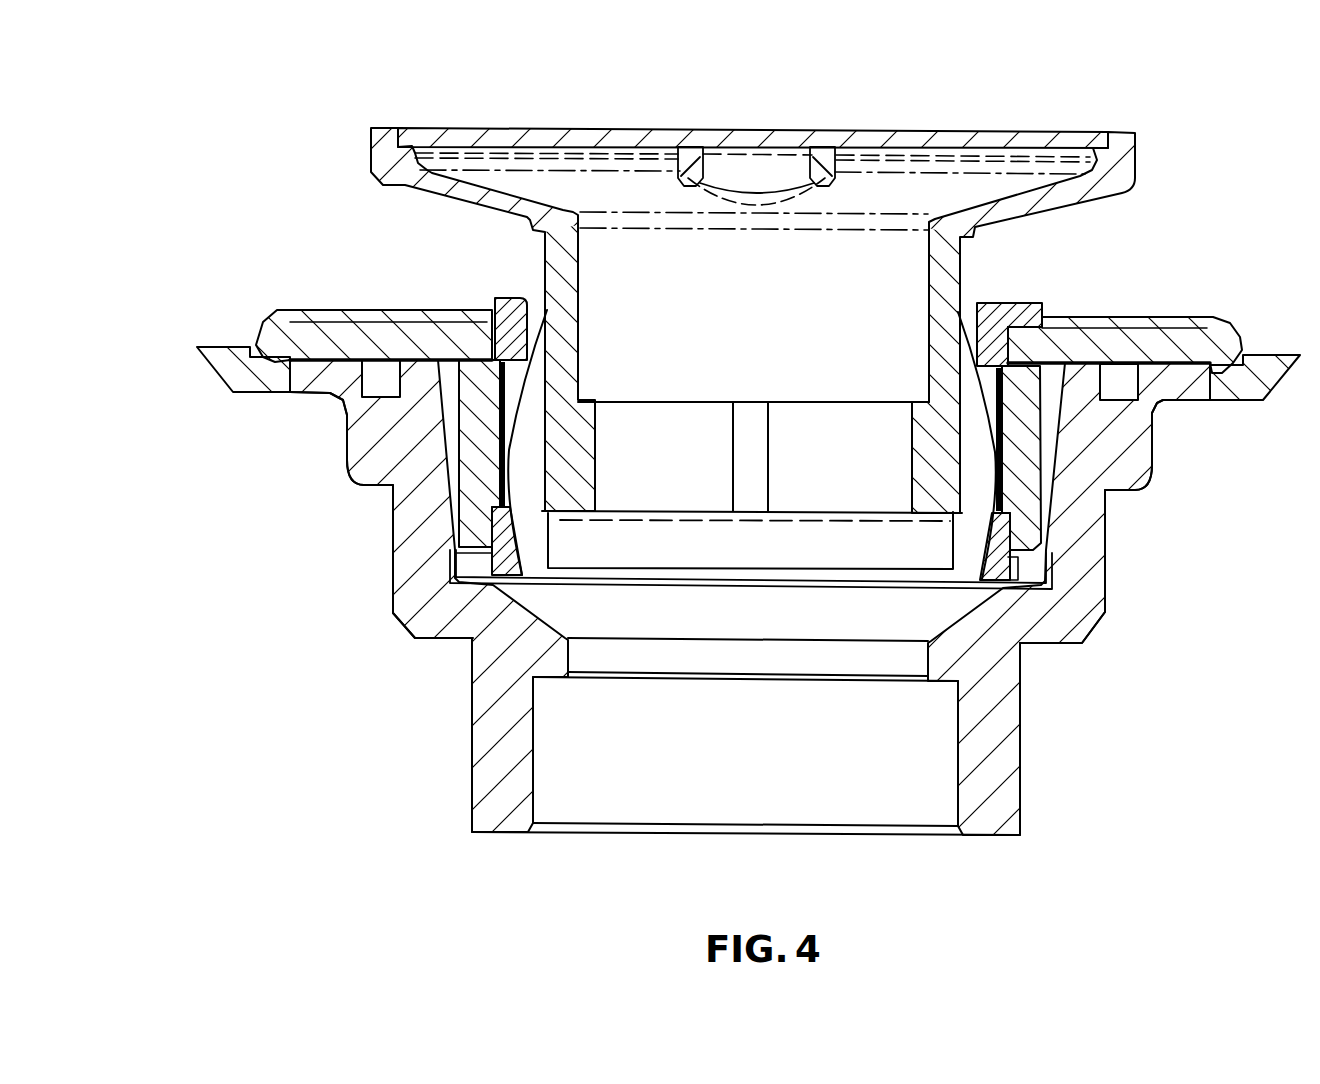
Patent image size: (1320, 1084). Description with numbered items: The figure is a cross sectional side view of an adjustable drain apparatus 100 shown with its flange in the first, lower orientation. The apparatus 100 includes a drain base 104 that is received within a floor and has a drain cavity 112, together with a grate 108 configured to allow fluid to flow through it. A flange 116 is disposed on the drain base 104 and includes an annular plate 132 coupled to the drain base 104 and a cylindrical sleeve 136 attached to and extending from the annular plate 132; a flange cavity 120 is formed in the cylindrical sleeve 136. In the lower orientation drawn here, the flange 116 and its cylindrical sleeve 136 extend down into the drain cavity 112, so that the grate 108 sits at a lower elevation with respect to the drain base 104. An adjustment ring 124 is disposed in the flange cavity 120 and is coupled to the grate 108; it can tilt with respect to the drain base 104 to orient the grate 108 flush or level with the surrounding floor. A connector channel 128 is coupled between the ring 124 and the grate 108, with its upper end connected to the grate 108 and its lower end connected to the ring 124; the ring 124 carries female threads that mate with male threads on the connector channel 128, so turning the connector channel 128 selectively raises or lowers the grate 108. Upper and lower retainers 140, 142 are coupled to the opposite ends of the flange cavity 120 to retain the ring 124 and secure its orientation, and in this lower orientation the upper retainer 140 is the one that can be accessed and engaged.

The adjustable drain apparatus 100 is at (254, 627).
The drain base 104 is at (473, 702).
The grate 108 is at (1090, 140).
The drain cavity 112 is at (1032, 567).
The flange 116 is at (309, 298).
The flange cavity 120 is at (1000, 497).
The adjustment ring 124 is at (1017, 458).
The connector channel 128 is at (967, 265).
The annular plate 132 is at (1177, 347).
The cylindrical sleeve 136 is at (1000, 455).
The first or upper retainer 140 is at (500, 298).
The second or lower retainer 142 is at (470, 553).